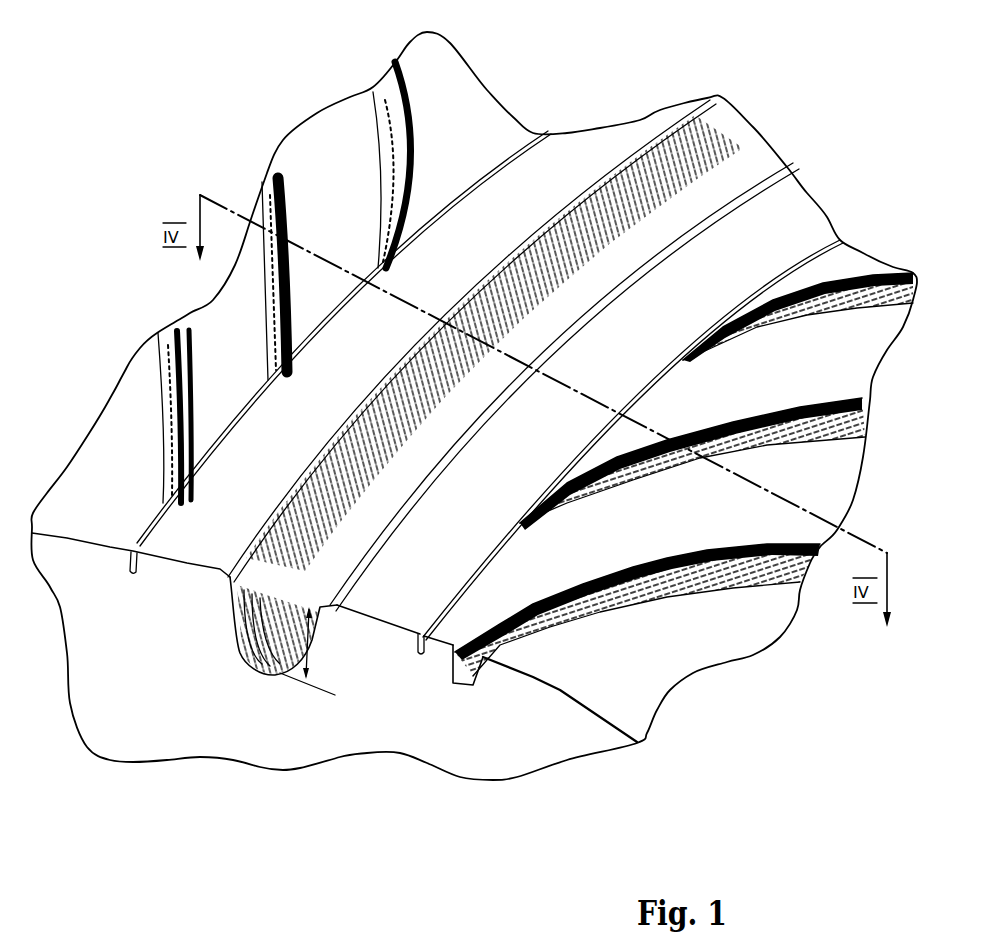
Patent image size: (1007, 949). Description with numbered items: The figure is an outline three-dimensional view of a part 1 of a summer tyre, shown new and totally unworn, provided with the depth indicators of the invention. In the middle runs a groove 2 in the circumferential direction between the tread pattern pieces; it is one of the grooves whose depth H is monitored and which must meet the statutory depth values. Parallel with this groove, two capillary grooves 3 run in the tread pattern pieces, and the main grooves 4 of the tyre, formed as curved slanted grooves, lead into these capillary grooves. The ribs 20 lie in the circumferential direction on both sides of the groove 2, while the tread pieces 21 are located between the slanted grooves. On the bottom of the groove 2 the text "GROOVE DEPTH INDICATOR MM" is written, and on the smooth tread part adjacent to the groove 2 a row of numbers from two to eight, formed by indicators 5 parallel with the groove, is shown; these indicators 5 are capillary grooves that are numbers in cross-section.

The tyre part 1 is at (480, 130).
The groove 2 is at (257, 620).
The capillary grooves 3 is at (493, 563).
The main grooves 4 is at (618, 590).
The indicators 5 is at (595, 367).
The ribs 20 is at (448, 556).
The tread pieces 21 is at (752, 393).
The depth of the groove H is at (307, 651).